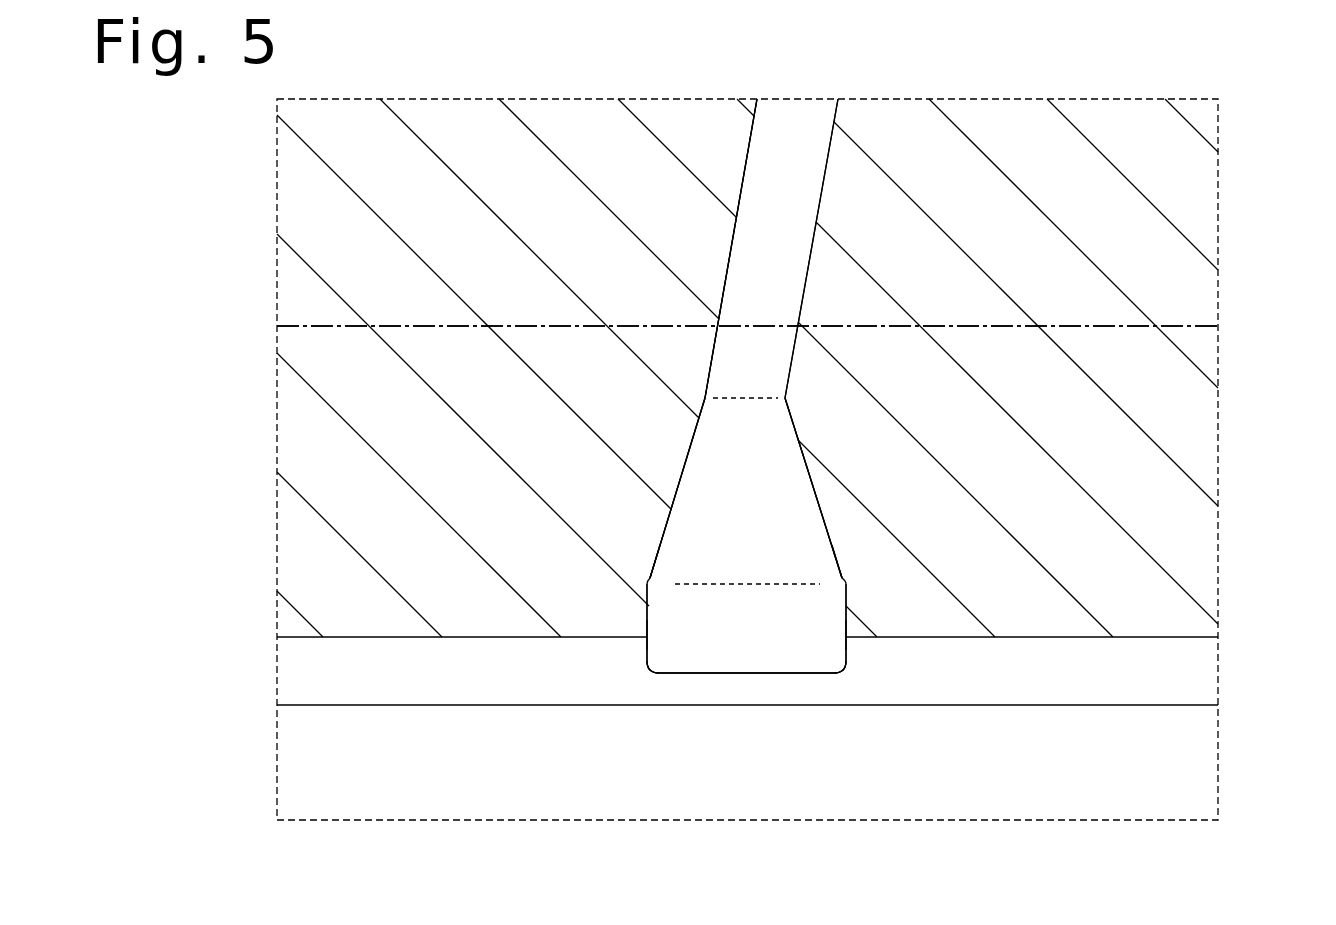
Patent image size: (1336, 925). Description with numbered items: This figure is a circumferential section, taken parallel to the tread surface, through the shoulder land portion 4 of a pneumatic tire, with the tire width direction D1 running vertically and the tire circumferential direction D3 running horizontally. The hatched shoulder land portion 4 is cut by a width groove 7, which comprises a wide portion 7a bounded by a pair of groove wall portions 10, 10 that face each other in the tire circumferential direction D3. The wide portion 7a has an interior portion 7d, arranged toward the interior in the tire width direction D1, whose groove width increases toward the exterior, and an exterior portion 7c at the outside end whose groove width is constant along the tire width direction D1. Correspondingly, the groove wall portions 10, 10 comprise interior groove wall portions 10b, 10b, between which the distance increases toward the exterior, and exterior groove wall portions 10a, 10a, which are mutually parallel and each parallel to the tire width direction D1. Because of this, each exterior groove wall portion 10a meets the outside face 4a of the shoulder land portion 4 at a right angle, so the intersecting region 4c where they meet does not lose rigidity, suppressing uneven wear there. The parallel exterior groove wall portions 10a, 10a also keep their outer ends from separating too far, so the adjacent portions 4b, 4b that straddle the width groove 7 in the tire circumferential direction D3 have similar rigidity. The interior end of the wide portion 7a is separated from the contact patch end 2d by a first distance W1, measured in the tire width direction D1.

The shoulder land portion 4 is at (284, 142).
The outside face 4a is at (288, 682).
The adjacent portions 4b is at (692, 444).
The intersecting region 4c is at (641, 640).
The width groove 7 is at (709, 270).
The wide portion 7a is at (674, 478).
The exterior portion 7c is at (760, 638).
The interior portion 7d is at (759, 501).
The groove wall portions 10 is at (714, 367).
The exterior groove wall portions 10a is at (648, 625).
The interior groove wall portions 10b is at (654, 564).
The contact patch end 2d is at (1163, 326).
The first distance W1 is at (945, 398).
The tire width direction D1 is at (1293, 442).
The tire circumferential direction D3 is at (798, 881).